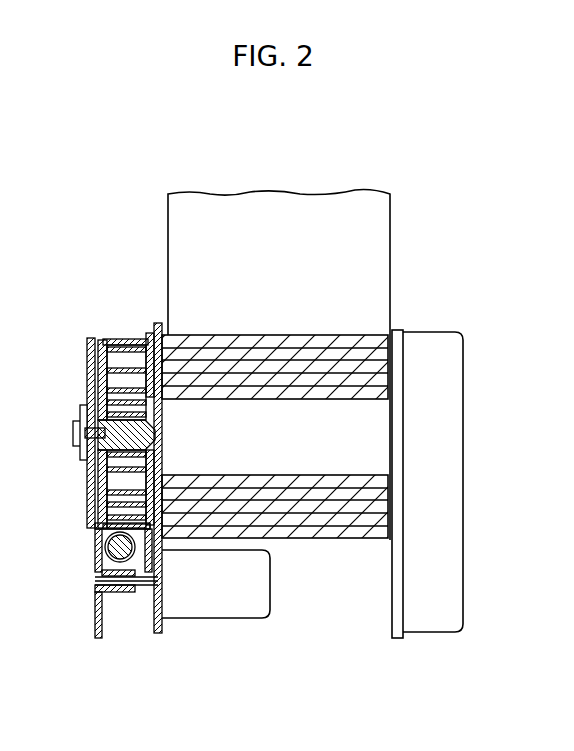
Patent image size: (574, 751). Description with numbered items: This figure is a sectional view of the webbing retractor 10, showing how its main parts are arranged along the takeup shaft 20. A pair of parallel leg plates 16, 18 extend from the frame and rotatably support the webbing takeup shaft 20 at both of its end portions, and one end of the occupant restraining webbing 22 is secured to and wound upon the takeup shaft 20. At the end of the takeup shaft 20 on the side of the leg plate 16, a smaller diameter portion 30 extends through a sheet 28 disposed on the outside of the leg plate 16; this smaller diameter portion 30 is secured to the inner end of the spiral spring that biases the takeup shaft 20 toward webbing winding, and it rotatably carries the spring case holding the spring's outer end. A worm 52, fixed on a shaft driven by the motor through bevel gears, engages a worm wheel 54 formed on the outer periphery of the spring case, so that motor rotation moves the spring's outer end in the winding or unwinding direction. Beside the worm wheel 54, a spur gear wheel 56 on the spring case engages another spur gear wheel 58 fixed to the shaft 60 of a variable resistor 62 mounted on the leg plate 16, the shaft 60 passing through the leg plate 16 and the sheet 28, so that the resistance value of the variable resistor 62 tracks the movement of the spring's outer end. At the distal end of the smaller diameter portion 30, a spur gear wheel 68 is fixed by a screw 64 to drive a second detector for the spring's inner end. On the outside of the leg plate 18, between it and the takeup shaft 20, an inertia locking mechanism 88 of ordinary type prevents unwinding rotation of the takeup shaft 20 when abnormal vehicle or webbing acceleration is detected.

The webbing retractor 10 is at (408, 319).
The leg plate 16 is at (158, 323).
The leg plate 18 is at (394, 640).
The webbing takeup shaft 20 is at (272, 415).
The occupant restraining webbing 22 is at (390, 228).
The sheet 28 is at (148, 333).
The smaller diameter portion 30 is at (100, 462).
The worm 52 is at (97, 553).
The worm wheel 54 is at (118, 340).
The spur gear wheel 56 is at (97, 536).
The spur gear wheel 58 is at (93, 596).
The shaft 60 is at (135, 587).
The variable resistor 62 is at (268, 598).
The screw 64 is at (76, 422).
The spur gear wheel 68 is at (87, 362).
The inertia locking mechanism 88 is at (464, 447).